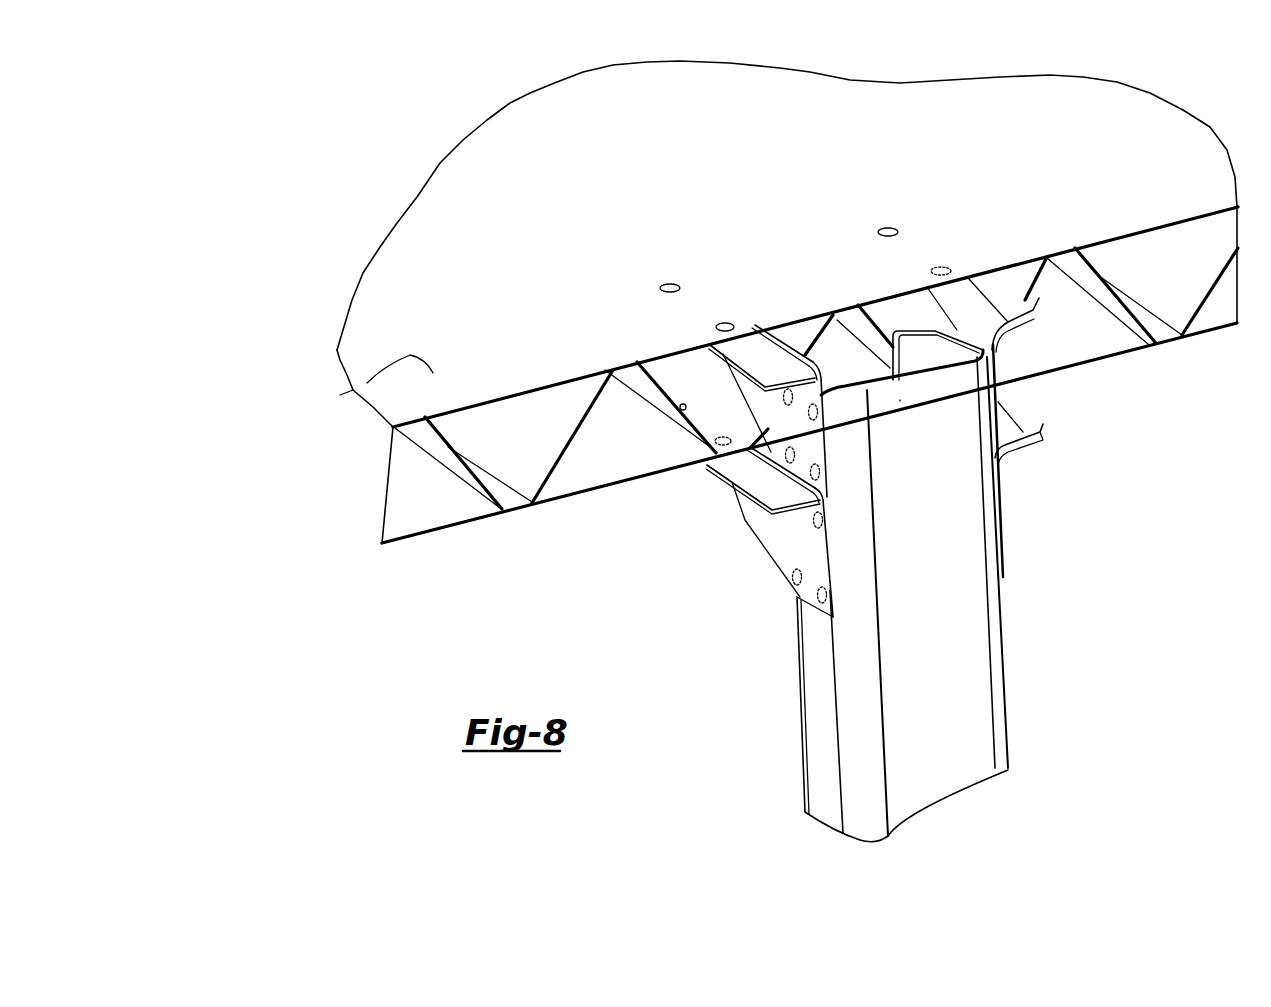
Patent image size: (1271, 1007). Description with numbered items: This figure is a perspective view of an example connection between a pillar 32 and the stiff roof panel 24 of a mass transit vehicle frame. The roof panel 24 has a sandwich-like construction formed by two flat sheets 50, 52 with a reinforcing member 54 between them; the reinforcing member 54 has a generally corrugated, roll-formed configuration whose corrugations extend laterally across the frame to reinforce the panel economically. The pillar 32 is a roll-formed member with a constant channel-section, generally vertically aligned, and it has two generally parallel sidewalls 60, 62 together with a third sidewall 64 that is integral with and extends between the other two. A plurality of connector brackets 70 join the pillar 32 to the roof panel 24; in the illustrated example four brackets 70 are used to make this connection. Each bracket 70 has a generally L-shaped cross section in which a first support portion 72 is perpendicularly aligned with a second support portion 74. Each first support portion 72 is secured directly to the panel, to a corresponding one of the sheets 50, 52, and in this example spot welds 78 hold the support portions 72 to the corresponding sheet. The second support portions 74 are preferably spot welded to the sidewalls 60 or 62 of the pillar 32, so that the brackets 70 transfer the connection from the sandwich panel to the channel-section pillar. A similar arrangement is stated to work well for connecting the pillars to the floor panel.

The roof panel 24 is at (530, 182).
The pillar 32 is at (953, 675).
The sheet 50 is at (353, 389).
The sheet 52 is at (628, 450).
The reinforcing member 54 is at (432, 445).
The sidewall 60 is at (817, 687).
The sidewall 62 is at (957, 356).
The third sidewall 64 is at (937, 587).
The connector bracket 70 is at (841, 413).
The first support portion 72 is at (747, 357).
The second support portion 74 is at (816, 423).
The spot weld 78 is at (727, 323).